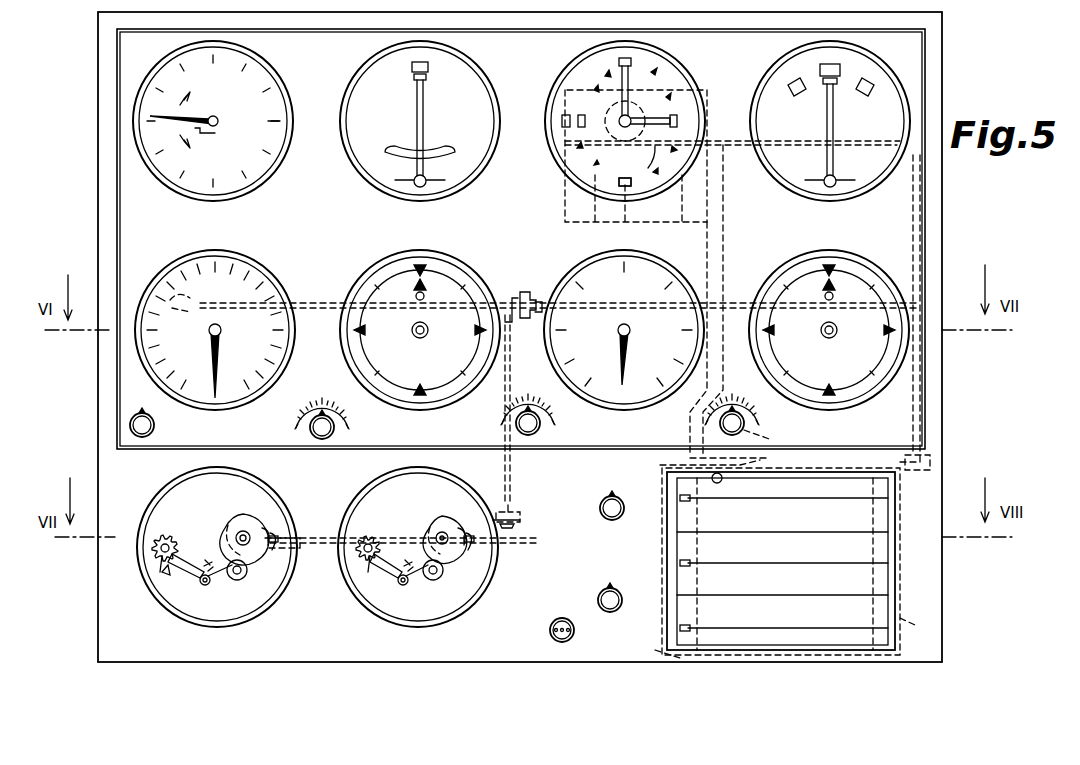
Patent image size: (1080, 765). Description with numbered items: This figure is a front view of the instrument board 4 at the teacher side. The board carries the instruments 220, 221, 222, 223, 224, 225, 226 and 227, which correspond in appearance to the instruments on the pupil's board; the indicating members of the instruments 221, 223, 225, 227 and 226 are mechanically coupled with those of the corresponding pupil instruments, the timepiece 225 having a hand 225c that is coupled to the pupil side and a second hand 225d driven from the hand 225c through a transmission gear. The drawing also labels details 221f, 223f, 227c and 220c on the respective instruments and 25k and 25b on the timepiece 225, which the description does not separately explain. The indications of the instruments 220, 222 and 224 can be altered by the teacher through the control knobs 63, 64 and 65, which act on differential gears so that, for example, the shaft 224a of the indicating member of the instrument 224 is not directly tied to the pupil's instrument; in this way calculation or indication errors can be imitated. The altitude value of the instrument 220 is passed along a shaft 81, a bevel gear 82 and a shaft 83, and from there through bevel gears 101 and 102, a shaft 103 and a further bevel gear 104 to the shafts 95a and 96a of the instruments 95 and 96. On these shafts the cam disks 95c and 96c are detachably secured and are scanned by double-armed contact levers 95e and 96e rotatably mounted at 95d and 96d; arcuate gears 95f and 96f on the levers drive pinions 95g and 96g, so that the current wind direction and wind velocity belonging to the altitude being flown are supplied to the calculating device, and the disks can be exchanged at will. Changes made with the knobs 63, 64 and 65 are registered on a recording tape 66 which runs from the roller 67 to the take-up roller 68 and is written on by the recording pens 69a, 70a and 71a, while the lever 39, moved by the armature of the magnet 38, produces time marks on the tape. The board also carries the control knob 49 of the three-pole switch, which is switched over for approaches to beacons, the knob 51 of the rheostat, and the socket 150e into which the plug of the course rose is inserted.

The instrument board 4 is at (942, 53).
The instrument 221 is at (265, 78).
The pointer 221f is at (226, 134).
The instrument 223 is at (477, 82).
The pointer 223f is at (413, 112).
The instrument 225 is at (676, 70).
The hand 225c is at (625, 70).
The hand 225d is at (675, 108).
The contact 25k is at (562, 121).
The contact 25b is at (635, 190).
The instrument 227 is at (878, 67).
The pointer 227c is at (825, 112).
The instrument 220 is at (220, 272).
The pointer 220c is at (214, 382).
The instrument 222 is at (400, 283).
The instrument 224 is at (585, 275).
The shaft 224a is at (620, 380).
The instrument 226 is at (805, 284).
The control knob 63 is at (334, 430).
The control knob 64 is at (540, 430).
The control knob 65 is at (725, 428).
The control knob 49 is at (620, 516).
The knob 51 is at (616, 594).
The socket 150e is at (574, 632).
The bevel gear 82 is at (522, 290).
The shaft 81 is at (548, 292).
The shaft 83 is at (520, 488).
The bevel gear 104 is at (520, 524).
The magnet 38 is at (770, 439).
The lever 39 is at (750, 464).
The instrument 96 is at (165, 492).
The shaft 96a is at (238, 520).
The cam disk 96c is at (265, 530).
The rotatable mounting 96d is at (206, 588).
The double armed contact lever 96e is at (165, 572).
The arcuate gear 96f is at (160, 568).
The pinion 96g is at (172, 542).
The instrument 95 is at (365, 492).
The shaft 95a is at (438, 520).
The cam disk 95c is at (455, 545).
The rotatable mounting 95d is at (400, 588).
The double armed contact lever 95e is at (420, 578).
The arcuate gear 95f is at (368, 568).
The pinion 95g is at (375, 542).
The bevel gear 101 is at (460, 498).
The bevel gear 102 is at (300, 510).
The shaft 103 is at (330, 520).
The recording tape 66 is at (781, 561).
The recording pen 71a is at (690, 501).
The recording pen 70a is at (690, 566).
The recording pen 69a is at (690, 626).
The roller 67 is at (653, 646).
The roller 68 is at (914, 631).